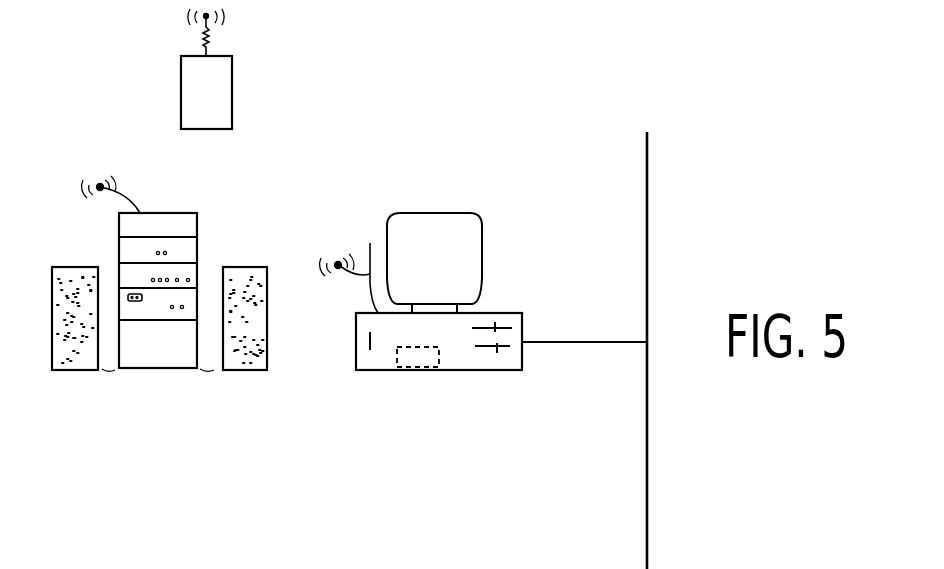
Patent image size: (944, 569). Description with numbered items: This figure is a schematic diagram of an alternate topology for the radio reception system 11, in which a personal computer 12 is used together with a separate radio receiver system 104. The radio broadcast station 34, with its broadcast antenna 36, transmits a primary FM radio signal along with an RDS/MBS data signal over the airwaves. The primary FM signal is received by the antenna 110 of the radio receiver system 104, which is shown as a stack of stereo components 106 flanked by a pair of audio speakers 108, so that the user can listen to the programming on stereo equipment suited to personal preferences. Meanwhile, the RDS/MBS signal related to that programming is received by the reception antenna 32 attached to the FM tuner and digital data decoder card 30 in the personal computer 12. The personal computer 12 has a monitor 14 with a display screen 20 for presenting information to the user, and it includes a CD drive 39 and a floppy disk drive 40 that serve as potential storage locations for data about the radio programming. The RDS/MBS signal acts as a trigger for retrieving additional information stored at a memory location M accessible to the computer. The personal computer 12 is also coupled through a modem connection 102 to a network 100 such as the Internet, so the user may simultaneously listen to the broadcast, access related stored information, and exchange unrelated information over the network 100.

The radio reception system 11 is at (700, 126).
The network 100 is at (648, 226).
The connection 102 is at (580, 341).
The personal computer 12 is at (424, 276).
The monitor 14 is at (483, 230).
The display screen 20 is at (433, 222).
The reception antenna 32 is at (351, 261).
The FM tuner and digital data decoder card 30 is at (369, 337).
The floppy disk drive 40 is at (495, 326).
The CD drive 39 is at (495, 350).
The storage location M is at (422, 367).
The radio receiver system 104 is at (186, 253).
The stereo components 106 is at (193, 303).
The audio speakers 108 is at (73, 273).
The antenna 110 is at (125, 194).
The radio broadcast station 34 is at (247, 69).
The broadcast antenna 36 is at (208, 53).